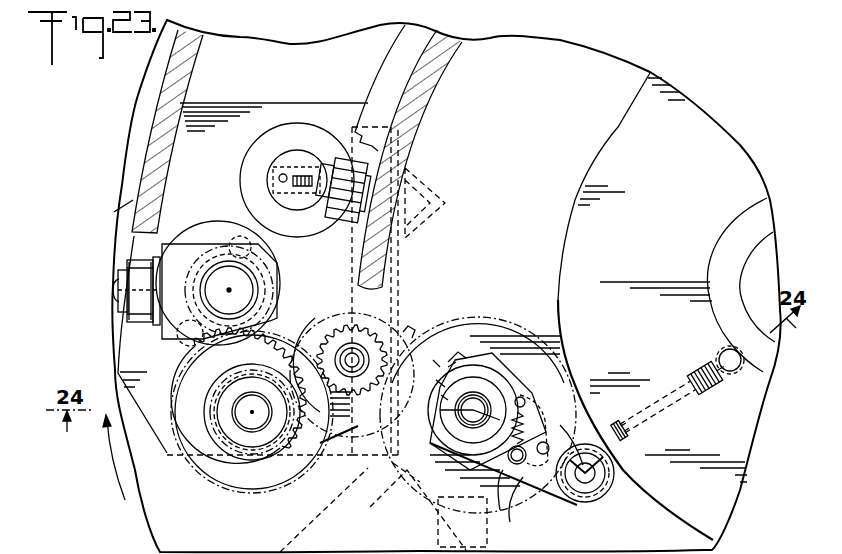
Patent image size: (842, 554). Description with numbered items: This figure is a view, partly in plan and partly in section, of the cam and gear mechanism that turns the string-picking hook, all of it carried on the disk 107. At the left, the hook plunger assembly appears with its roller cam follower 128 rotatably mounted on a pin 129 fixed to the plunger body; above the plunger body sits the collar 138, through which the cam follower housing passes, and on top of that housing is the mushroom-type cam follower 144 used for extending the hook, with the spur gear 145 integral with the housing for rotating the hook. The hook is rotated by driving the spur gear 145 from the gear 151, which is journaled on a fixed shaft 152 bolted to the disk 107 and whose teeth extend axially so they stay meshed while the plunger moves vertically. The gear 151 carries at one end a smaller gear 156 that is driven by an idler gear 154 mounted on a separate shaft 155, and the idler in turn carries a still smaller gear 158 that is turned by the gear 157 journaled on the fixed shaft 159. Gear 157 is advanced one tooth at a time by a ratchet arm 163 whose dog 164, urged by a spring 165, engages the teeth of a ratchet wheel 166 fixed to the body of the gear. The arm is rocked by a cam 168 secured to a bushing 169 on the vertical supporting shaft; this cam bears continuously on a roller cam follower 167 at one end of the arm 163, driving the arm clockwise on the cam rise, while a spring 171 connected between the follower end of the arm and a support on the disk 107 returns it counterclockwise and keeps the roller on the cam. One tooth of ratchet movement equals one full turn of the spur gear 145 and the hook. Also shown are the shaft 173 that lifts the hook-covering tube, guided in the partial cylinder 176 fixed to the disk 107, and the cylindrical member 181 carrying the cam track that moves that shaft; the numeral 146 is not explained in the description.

The disk 107 is at (148, 533).
The side wall 146 is at (172, 90).
The cylindrical member 181 is at (423, 92).
The cam 168 is at (613, 131).
The bushing 169 is at (746, 218).
The roller cam follower 128 is at (133, 262).
The pin 129 is at (117, 291).
The mushroom-type cam follower 144 is at (217, 275).
The collar 138 is at (259, 273).
The spur gear 145 is at (276, 318).
The partial cylinder 176 is at (280, 133).
The shaft 173 is at (295, 160).
The gear 151 is at (209, 480).
The fixed shaft 152 is at (258, 423).
The gear 156 is at (300, 458).
The gear 158 is at (383, 343).
The gear 157 is at (415, 327).
The shaft 155 is at (362, 360).
The idler gear 154 is at (363, 433).
The fixed shaft 159 is at (474, 402).
The ratchet wheel 166 is at (453, 360).
The spring 165 is at (528, 427).
The dog 164 is at (528, 440).
The ratchet arm 163 is at (523, 478).
The roller cam follower 167 is at (600, 505).
The spring 171 is at (658, 393).